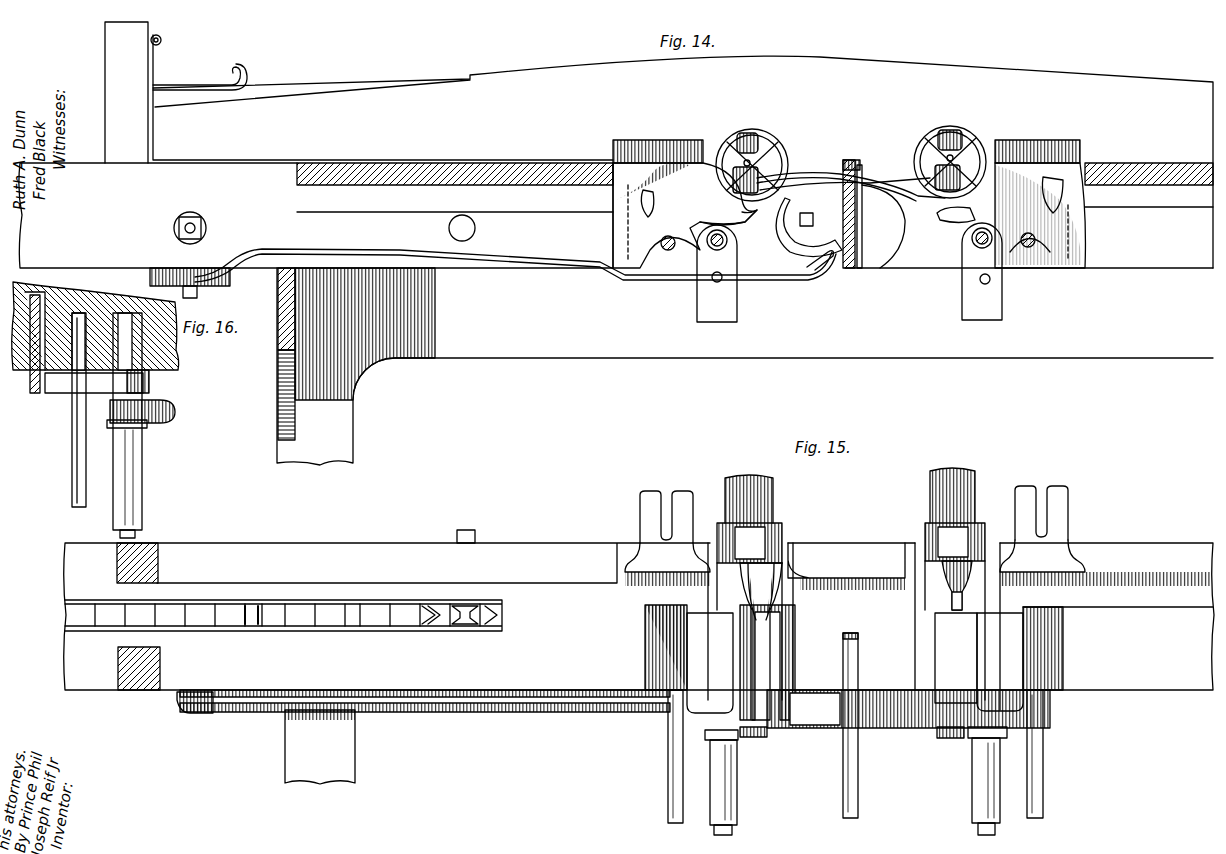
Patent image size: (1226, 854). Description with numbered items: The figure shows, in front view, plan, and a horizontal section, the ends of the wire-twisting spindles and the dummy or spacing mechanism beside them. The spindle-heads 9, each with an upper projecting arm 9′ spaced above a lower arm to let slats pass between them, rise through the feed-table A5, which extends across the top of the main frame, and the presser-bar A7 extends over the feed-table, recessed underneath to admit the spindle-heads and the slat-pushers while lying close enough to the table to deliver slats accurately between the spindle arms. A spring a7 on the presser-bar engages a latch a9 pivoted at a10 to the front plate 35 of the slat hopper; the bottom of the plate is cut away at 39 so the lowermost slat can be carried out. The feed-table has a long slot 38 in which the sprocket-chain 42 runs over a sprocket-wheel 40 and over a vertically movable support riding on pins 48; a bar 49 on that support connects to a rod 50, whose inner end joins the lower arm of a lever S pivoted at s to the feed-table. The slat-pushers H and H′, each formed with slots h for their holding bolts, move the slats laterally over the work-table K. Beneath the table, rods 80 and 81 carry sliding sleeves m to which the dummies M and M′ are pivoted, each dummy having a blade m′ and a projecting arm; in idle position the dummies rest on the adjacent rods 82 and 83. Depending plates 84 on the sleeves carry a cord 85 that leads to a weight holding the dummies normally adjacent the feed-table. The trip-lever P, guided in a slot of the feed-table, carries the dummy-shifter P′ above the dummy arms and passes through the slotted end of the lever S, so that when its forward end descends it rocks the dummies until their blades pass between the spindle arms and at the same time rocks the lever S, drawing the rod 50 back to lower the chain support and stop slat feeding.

In FIG. 14, the pivot a10 is at (162, 39).
In FIG. 14, the latch a9 is at (200, 75).
In FIG. 14, the spring a7 is at (258, 82).
In FIG. 14, the pins 48 is at (200, 217).
In FIG. 14, the work-table K is at (427, 172).
In FIG. 14, the presser-bar A7 is at (512, 117).
In FIG. 14, the feed-table A5 is at (616, 215).
In FIG. 14, the rod or pitman 50 is at (376, 253).
In FIG. 15, the rod or pitman 50 is at (415, 692).
In FIG. 14, the bar 49 is at (205, 290).
In FIG. 15, the bar 49 is at (190, 714).
In FIG. 14, the slat-pusher H is at (640, 150).
In FIG. 15, the slat-pusher H is at (667, 557).
In FIG. 14, the slat-pusher H′ is at (1040, 148).
In FIG. 15, the slat-pusher H′ is at (1042, 556).
In FIG. 14, the upper projecting arm 9′ is at (776, 134).
In FIG. 15, the upper projecting arm 9′ is at (752, 655).
In FIG. 14, the lever S is at (812, 190).
In FIG. 15, the lever S is at (862, 690).
In FIG. 14, the dummy-shifter P′ is at (878, 182).
In FIG. 15, the dummy-shifter P′ is at (908, 709).
In FIG. 14, the trip-lever P is at (860, 212).
In FIG. 15, the trip-lever P is at (858, 775).
In FIG. 14, the blade m′ is at (660, 195).
In FIG. 16, the blade m′ is at (36, 395).
In FIG. 15, the blade m′ is at (778, 656).
In FIG. 14, the beam A is at (745, 366).
In FIG. 15, the beam A is at (1125, 710).
In FIG. 14, the dummy M is at (665, 255).
In FIG. 16, the dummy M is at (97, 381).
In FIG. 15, the dummy M is at (689, 659).
In FIG. 14, the dummy M′ is at (1040, 215).
In FIG. 15, the dummy M′ is at (1000, 662).
In FIG. 14, the rod 82 is at (670, 252).
In FIG. 16, the rod 82 is at (72, 474).
In FIG. 15, the rod 82 is at (668, 768).
In FIG. 14, the rod 80 is at (712, 250).
In FIG. 15, the rod 80 is at (735, 828).
In FIG. 14, the rod 81 is at (955, 262).
In FIG. 15, the rod 81 is at (976, 830).
In FIG. 14, the depending arms or plates 84 is at (738, 307).
In FIG. 16, the depending arms or plates 84 is at (148, 428).
In FIG. 15, the depending arms or plates 84 is at (740, 745).
In FIG. 14, the cord 85 is at (990, 283).
In FIG. 14, the rod 83 is at (1035, 247).
In FIG. 15, the rod 83 is at (1043, 778).
In FIG. 14, the pivot s is at (809, 234).
In FIG. 16, the sleeve m is at (150, 467).
In FIG. 15, the sleeve m is at (740, 788).
In FIG. 15, the slot h is at (657, 514).
In FIG. 15, the spindle-head 9 is at (851, 543).
In FIG. 15, the front plate 35 is at (122, 565).
In FIG. 15, the cut-away 39 is at (128, 645).
In FIG. 15, the slot or channel 38 is at (241, 634).
In FIG. 15, the sprocket-chain 42 is at (372, 634).
In FIG. 15, the sprocket-wheel 40 is at (474, 632).